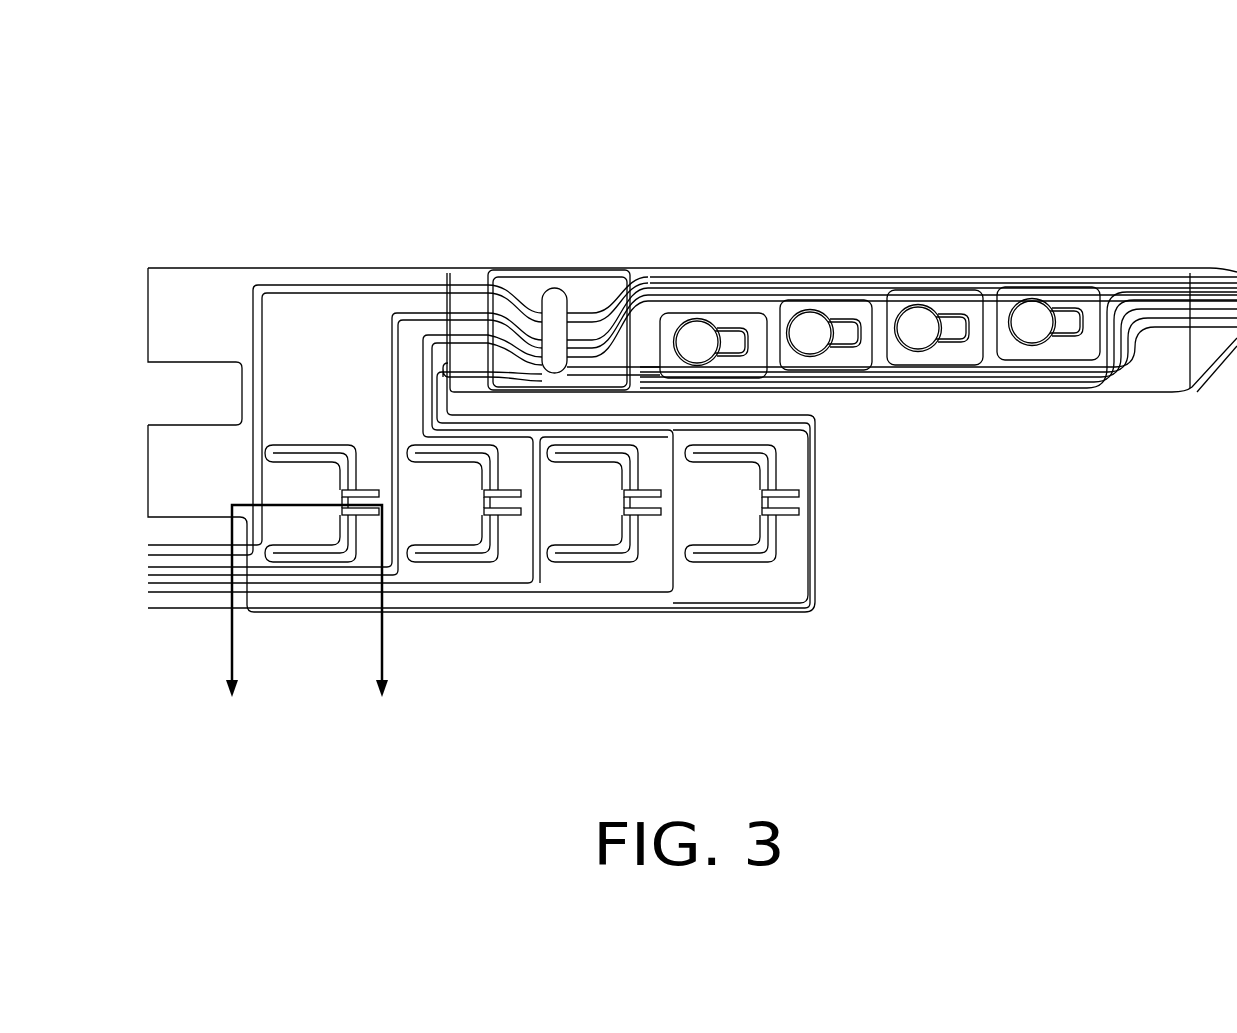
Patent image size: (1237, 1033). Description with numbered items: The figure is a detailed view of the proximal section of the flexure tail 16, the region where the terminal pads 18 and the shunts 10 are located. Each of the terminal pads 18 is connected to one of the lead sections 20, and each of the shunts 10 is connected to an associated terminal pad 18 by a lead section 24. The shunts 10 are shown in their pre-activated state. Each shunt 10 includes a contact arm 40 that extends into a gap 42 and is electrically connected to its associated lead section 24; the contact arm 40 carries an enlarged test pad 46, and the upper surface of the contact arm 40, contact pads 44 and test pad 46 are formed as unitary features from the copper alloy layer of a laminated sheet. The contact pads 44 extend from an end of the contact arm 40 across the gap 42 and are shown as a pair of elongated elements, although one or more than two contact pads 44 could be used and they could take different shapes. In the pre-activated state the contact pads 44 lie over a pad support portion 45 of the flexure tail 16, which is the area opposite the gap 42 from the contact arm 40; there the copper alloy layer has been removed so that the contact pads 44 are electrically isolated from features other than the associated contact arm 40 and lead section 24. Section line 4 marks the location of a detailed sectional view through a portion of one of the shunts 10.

The section line 4- 4 is at (304, 623).
The shunt 10 is at (766, 183).
The flexure tail 16 is at (685, 220).
The terminal pad 18 is at (780, 310).
The lead section 20 is at (948, 372).
The lead section 24 is at (390, 366).
The contact arm 40 is at (745, 486).
The gap 42 is at (753, 453).
The contact pad 44 is at (800, 496).
The pad support portion 45 is at (795, 528).
The test pad 46 is at (612, 525).